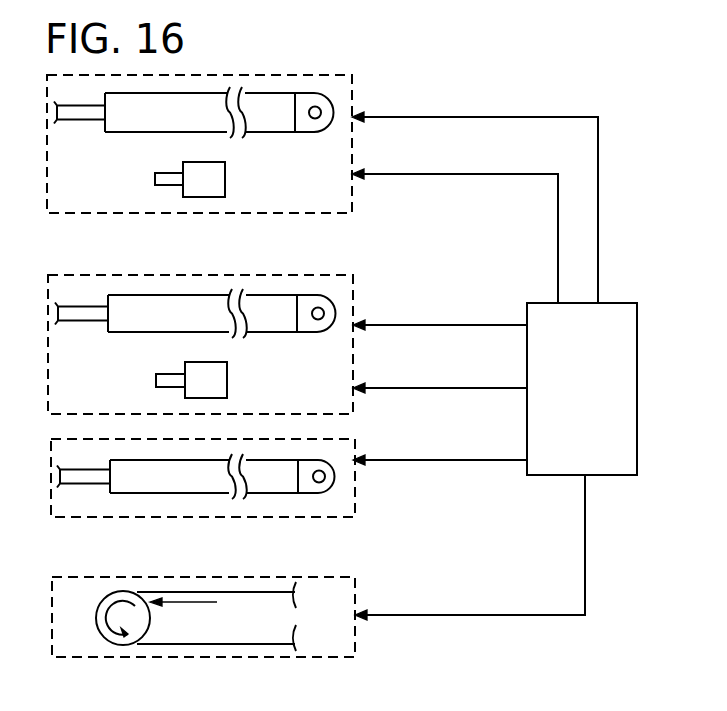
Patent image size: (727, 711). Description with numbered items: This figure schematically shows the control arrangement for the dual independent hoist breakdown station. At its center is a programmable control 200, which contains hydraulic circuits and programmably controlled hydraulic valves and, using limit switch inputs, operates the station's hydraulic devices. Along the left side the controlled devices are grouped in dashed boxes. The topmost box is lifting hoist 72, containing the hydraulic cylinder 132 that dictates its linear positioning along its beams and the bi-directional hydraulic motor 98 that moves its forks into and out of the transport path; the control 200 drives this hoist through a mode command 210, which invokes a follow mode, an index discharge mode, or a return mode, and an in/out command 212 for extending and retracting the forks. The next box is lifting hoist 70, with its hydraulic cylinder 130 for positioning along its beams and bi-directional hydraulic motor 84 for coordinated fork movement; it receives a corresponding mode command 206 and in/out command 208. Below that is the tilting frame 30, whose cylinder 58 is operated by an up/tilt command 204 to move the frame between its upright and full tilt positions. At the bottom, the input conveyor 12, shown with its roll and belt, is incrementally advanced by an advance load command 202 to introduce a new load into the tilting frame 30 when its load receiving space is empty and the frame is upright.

The input conveyor 12 is at (258, 657).
The tilting frame 30 is at (258, 517).
The up/tilt cylinder 58 is at (160, 493).
The lifting hoist 70 is at (257, 276).
The lifting hoist 72 is at (252, 76).
The bi-directional hydraulic motor 84 is at (227, 373).
The bi-directional hydraulic motor 98 is at (225, 172).
The hydraulic cylinder 130 is at (155, 332).
The hydraulic cylinder 132 is at (160, 132).
The programmable control 200 is at (605, 388).
The advance load command 202 is at (445, 617).
The up/tilt command 204 is at (435, 462).
The mode command 206 is at (430, 326).
The in/out command 208 is at (425, 389).
The mode command 210 is at (470, 118).
The in/out command 212 is at (425, 175).